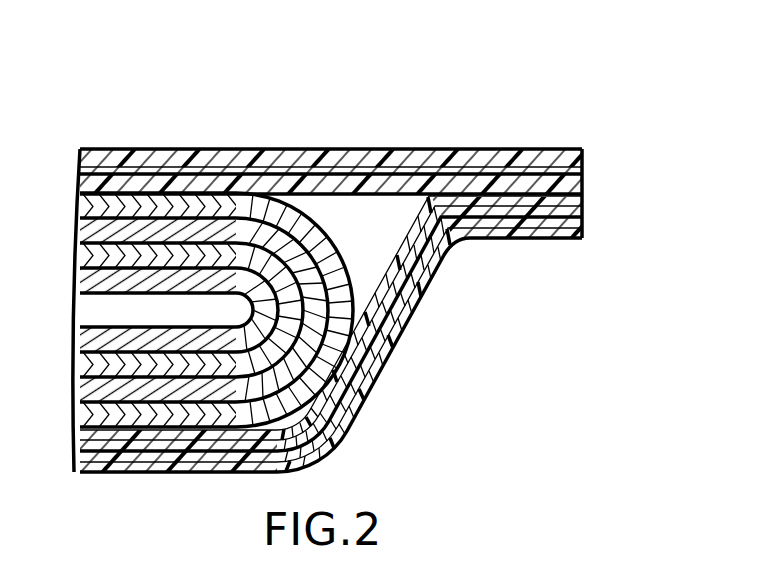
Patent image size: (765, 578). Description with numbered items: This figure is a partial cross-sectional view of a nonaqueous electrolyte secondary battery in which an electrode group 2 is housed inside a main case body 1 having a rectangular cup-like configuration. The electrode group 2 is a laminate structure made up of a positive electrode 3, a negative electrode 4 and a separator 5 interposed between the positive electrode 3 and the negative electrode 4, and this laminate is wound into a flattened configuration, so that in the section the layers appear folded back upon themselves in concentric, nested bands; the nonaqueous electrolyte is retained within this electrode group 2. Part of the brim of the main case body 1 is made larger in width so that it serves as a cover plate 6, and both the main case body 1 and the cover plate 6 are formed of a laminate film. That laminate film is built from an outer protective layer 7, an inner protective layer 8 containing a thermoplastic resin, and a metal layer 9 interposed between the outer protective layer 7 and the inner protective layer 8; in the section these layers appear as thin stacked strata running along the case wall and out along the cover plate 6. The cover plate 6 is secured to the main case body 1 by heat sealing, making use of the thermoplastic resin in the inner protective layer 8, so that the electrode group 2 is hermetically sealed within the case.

The main case body 1 is at (490, 240).
The electrode group 2 is at (65, 83).
The positive electrode 3 is at (236, 203).
The negative electrode 4 is at (95, 176).
The separator 5 is at (172, 197).
The cover plate 6 is at (510, 150).
The outer protective layer 7 is at (586, 240).
The inner protective layer 8 is at (583, 203).
The metal layer 9 is at (583, 218).